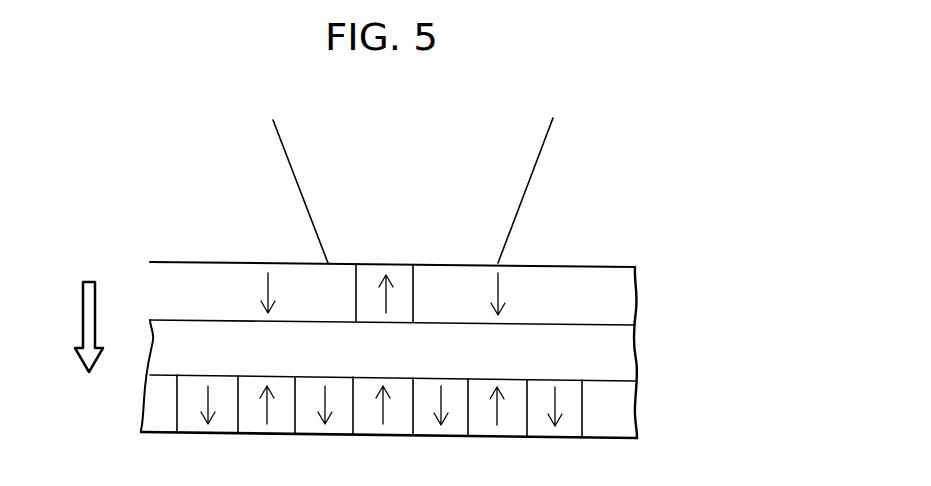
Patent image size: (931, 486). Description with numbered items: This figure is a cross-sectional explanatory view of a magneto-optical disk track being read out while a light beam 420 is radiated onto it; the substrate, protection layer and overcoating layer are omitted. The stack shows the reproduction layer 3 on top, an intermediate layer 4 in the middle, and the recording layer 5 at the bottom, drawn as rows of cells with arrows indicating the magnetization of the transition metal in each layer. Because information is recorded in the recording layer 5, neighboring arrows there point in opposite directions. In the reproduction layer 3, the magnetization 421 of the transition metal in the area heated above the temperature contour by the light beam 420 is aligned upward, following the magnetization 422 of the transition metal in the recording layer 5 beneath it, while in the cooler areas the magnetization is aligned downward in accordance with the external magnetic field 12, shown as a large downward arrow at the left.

The reproduction layer 3 is at (608, 298).
The intermediate layer 4 is at (615, 357).
The recording layer 5 is at (617, 412).
The external magnetic field 12 is at (80, 324).
The light beam 420 is at (533, 176).
The magnetization of the transition metal in the reproduction layer 421 is at (390, 308).
The magnetization of the transition metal in the recording layer 422 is at (383, 418).